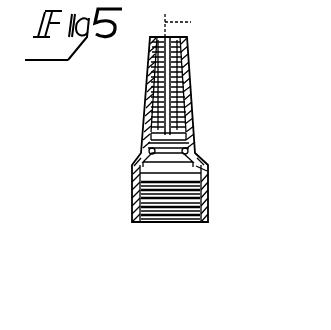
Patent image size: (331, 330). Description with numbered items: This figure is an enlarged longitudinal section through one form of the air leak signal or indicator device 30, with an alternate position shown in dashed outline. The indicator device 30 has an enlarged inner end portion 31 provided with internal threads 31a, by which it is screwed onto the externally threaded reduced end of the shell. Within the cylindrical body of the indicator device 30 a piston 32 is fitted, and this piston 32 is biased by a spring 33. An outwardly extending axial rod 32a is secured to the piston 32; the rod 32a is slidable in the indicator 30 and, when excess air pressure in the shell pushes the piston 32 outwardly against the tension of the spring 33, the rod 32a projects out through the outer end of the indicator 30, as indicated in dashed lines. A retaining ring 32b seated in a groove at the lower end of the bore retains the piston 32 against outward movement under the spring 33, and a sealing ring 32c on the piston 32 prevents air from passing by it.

The signal or indicator device 30 is at (193, 66).
The enlarged inner end portion 31 is at (206, 176).
The internal threads 31a is at (229, 243).
The piston 32 is at (195, 128).
The axial rod 32a is at (233, 35).
The retaining ring 32b is at (250, 157).
The sealing ring 32c is at (143, 143).
The spring 33 is at (176, 90).